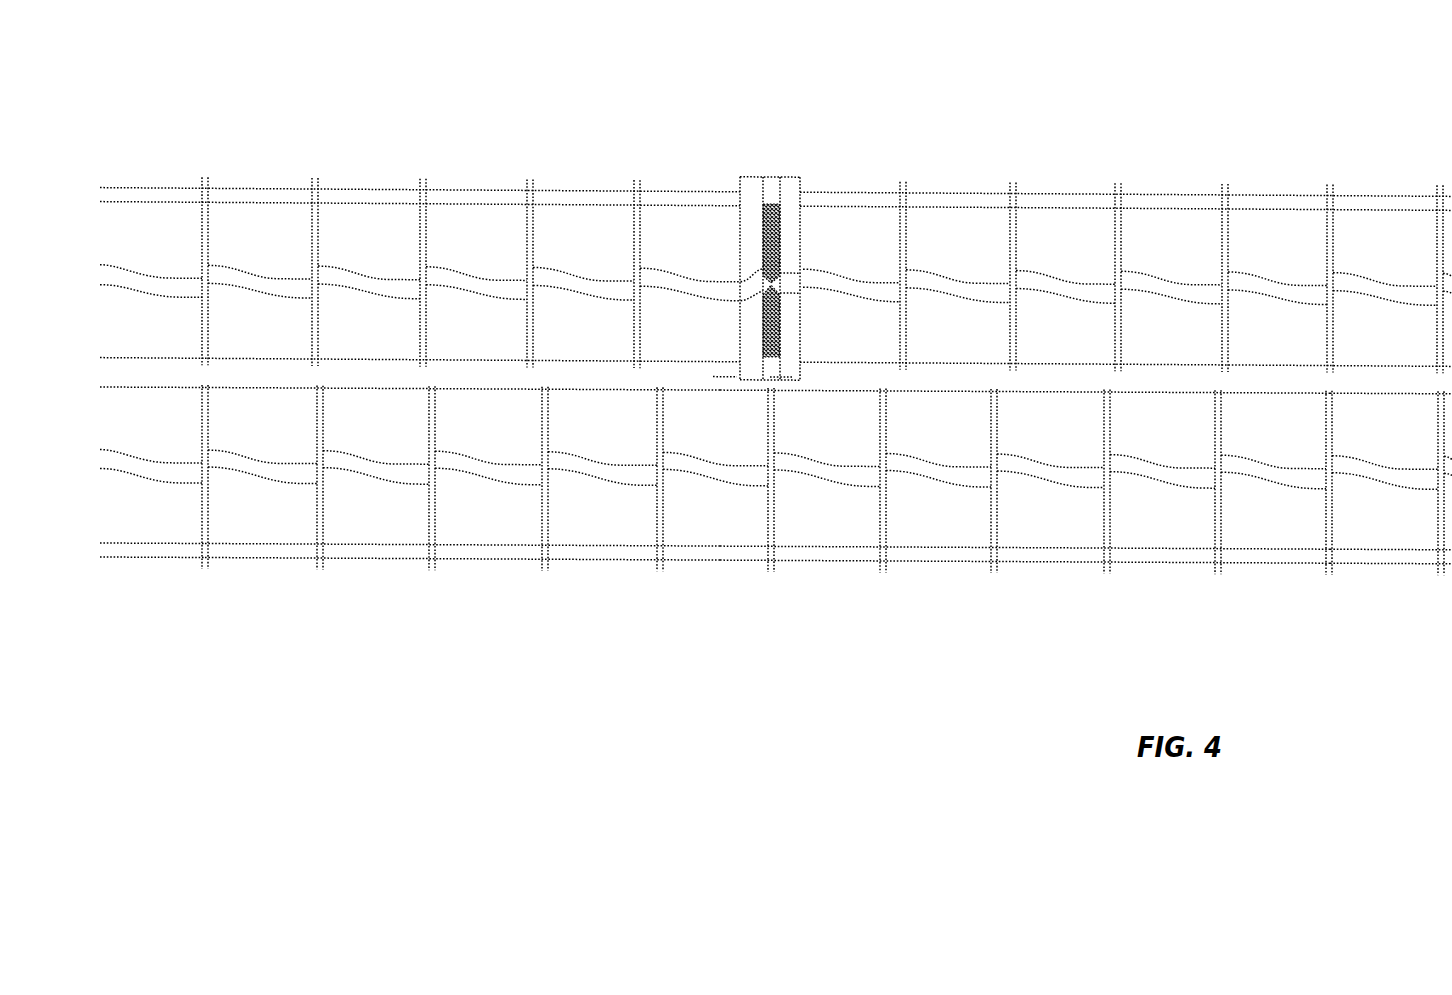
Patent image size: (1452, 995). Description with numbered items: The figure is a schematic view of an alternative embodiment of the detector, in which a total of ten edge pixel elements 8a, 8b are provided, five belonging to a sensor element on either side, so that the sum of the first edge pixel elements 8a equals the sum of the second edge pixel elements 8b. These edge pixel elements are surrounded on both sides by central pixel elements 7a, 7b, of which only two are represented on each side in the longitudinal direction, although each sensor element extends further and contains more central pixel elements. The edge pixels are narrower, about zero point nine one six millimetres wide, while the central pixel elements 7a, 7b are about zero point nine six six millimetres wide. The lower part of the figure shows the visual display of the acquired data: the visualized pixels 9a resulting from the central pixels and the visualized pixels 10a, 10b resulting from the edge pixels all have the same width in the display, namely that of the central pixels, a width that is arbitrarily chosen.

The central pixel element 7a is at (153, 172).
The central pixel element 7b is at (1377, 188).
The first edge pixel elements 8a is at (269, 178).
The second edge pixel elements 8b is at (845, 188).
The visualized pixels resulting from the central pixels 9a is at (183, 568).
The visualized pixels resulting from the edge pixels 10a is at (222, 560).
The visualized pixels resulting from the edge pixels 10b is at (798, 568).